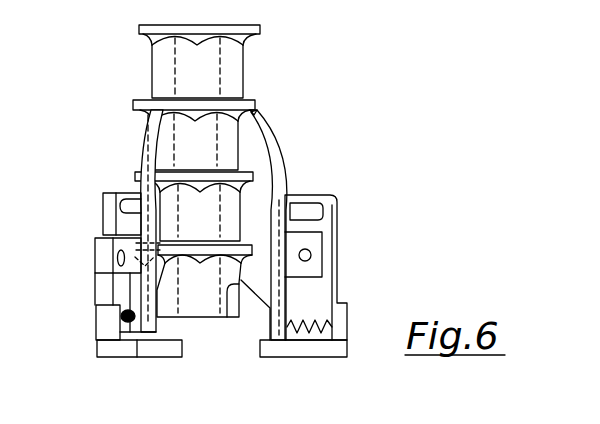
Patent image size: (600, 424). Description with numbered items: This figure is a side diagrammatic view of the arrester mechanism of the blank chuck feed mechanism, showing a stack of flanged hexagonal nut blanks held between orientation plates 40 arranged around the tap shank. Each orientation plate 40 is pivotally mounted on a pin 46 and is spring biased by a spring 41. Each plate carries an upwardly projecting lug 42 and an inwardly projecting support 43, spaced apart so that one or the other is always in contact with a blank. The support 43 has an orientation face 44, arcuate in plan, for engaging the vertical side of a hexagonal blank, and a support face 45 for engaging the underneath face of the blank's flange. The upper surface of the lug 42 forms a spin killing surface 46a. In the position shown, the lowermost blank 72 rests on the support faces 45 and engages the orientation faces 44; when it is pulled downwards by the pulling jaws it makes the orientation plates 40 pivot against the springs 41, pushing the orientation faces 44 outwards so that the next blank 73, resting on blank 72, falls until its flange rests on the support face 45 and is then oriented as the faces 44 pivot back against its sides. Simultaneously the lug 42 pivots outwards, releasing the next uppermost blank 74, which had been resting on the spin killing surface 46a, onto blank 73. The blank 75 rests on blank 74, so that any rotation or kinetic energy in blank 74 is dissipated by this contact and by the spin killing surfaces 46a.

The blank 75 is at (236, 54).
The next uppermost blank 74 is at (178, 143).
The uppermost blank 73 is at (167, 221).
The lowermost blank 72 is at (205, 306).
The support face 45 is at (253, 253).
The upwardly projecting lug 42 is at (277, 155).
The spin killing surface 46a is at (256, 110).
The orientation plate 40 is at (330, 216).
The pin 46 is at (311, 258).
The spring 41 is at (317, 321).
The inwardly projecting support 43 is at (263, 290).
The orientation face 44 is at (228, 320).